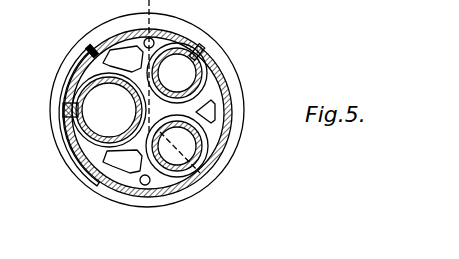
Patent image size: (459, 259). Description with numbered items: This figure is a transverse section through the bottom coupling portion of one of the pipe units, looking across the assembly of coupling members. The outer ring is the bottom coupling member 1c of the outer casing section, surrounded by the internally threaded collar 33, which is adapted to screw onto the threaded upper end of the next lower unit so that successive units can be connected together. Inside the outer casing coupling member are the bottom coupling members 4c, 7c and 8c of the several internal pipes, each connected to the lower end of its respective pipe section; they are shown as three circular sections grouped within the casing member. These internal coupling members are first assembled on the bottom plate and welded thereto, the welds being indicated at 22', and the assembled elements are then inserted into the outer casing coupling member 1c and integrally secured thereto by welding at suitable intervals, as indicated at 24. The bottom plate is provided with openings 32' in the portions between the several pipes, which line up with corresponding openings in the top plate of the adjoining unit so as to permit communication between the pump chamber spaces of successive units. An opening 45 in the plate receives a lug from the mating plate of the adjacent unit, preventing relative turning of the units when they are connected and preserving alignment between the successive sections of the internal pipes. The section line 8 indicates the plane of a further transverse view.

The bottom coupling member of the outer casing 1c is at (90, 46).
The welding 24 is at (200, 49).
The bottom coupling member 7c is at (208, 86).
The bottom coupling member 8c is at (204, 153).
The internally threaded collar 33 is at (57, 151).
The bottom coupling member 4c is at (110, 89).
The welding 22' is at (92, 138).
The openings 32' is at (148, 152).
The openings 45 is at (150, 186).
The section line 8 is at (227, 187).